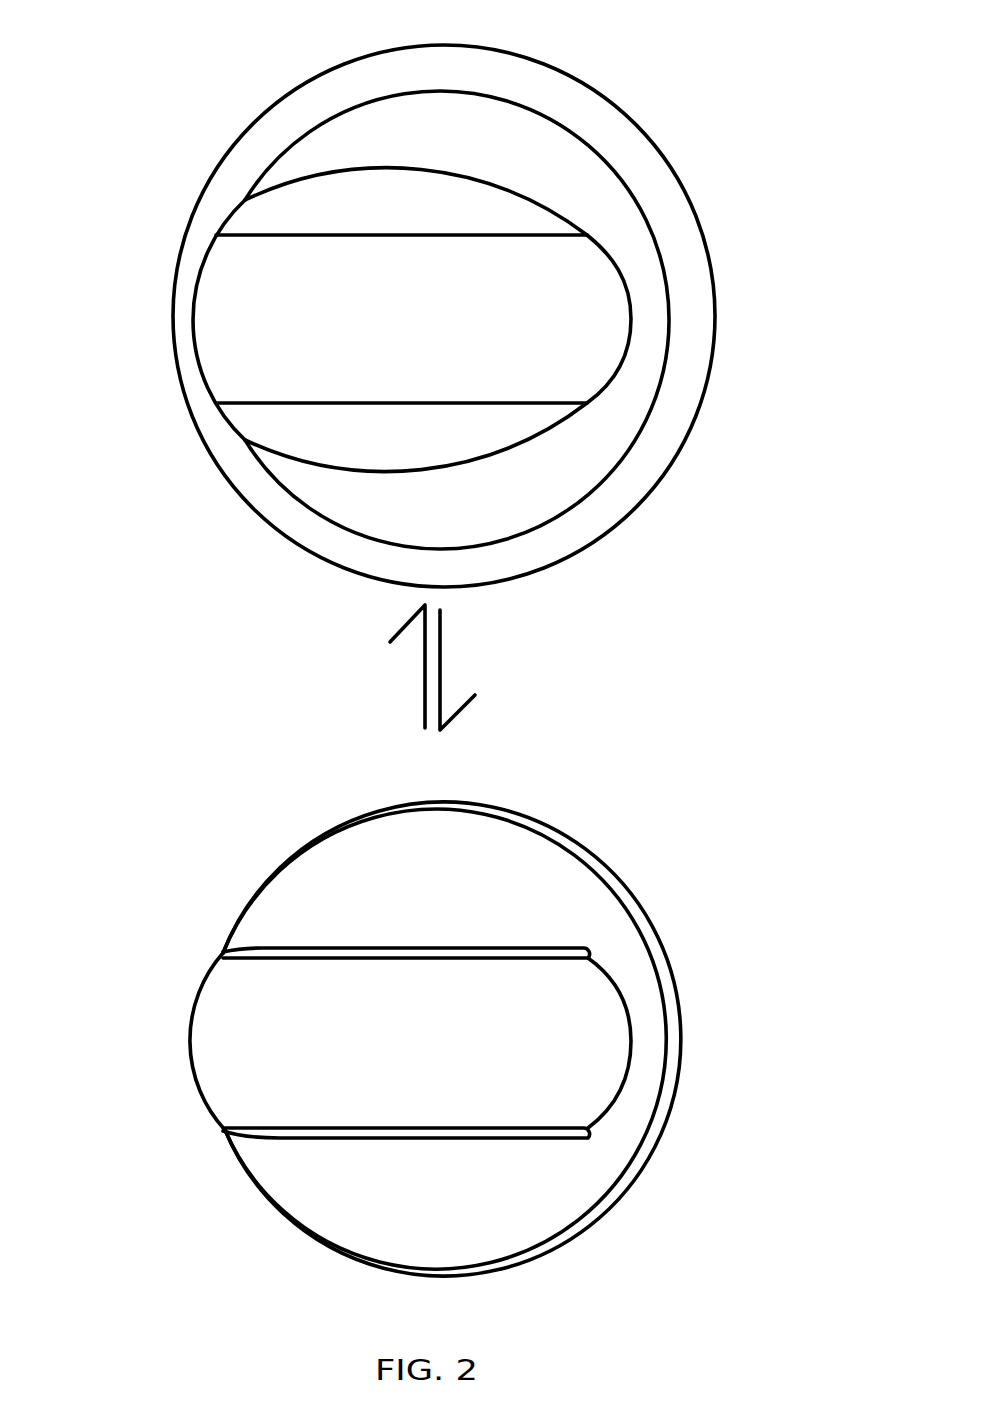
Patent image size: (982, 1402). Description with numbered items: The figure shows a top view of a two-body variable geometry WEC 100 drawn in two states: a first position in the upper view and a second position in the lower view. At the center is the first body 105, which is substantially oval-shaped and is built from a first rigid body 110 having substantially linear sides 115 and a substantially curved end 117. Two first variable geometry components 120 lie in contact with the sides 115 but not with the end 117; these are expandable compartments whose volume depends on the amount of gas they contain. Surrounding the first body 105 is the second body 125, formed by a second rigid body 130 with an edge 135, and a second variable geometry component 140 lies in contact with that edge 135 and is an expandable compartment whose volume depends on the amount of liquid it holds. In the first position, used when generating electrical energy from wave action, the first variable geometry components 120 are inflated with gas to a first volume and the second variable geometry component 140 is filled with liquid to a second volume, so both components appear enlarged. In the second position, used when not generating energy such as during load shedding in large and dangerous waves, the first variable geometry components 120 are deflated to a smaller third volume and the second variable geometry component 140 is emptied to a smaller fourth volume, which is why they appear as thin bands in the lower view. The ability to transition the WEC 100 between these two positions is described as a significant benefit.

The two-body variable geometry WEC 100 is at (725, 72).
The first body 105 is at (641, 309).
The first rigid body 110 is at (409, 326).
The side 115 is at (217, 233).
The end 117 is at (193, 323).
The first variable geometry component 120 is at (408, 219).
The second body 125 is at (257, 118).
The second rigid body 130 is at (515, 156).
The edge 135 is at (615, 167).
The second variable geometry component 140 is at (475, 86).